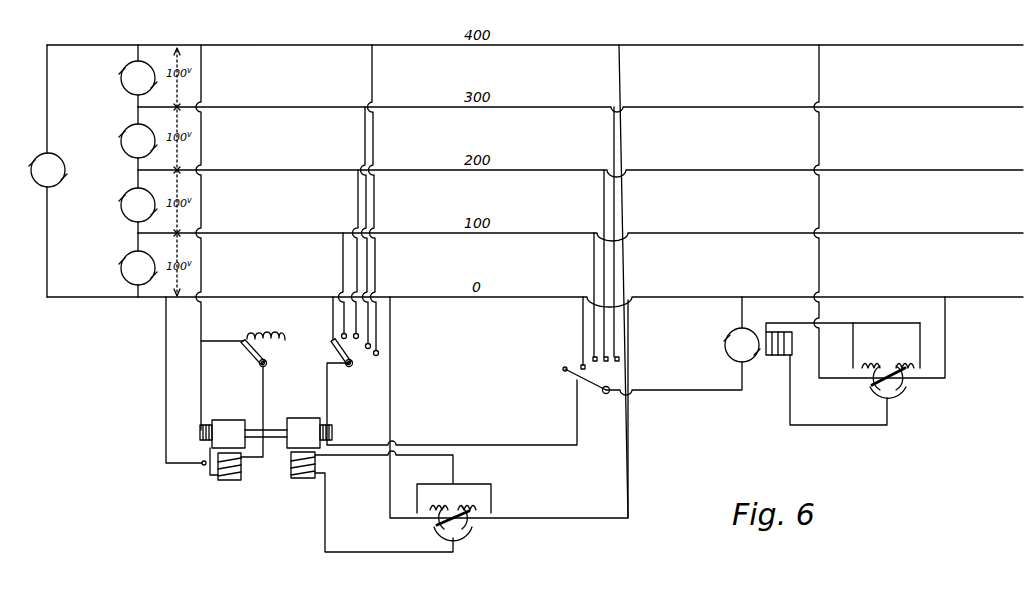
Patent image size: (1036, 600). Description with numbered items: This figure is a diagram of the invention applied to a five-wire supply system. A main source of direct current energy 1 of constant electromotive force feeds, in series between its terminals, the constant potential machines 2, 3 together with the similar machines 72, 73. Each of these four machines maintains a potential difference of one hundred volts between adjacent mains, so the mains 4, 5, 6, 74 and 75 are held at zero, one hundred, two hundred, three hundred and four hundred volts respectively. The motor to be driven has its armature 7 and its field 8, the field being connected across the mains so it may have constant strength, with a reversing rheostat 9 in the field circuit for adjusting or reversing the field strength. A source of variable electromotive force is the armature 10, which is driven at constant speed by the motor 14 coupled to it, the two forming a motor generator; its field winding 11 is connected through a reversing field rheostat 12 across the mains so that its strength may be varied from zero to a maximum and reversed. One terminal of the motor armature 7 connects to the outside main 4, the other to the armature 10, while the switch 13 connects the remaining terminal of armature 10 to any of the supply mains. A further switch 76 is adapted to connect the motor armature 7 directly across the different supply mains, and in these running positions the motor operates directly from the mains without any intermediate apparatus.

The main source of direct current energy 1 is at (36, 171).
The armature of dynamo electric machine 2 is at (132, 265).
The armature of dynamo electric machine 3 is at (132, 201).
The constant potential machine 72 is at (126, 138).
The constant potential machine 73 is at (126, 76).
The main 4 is at (535, 292).
The main 5 is at (580, 227).
The main 6 is at (580, 163).
The main 74 is at (580, 98).
The main 75 is at (535, 32).
The motor armature 7 is at (738, 343).
The motor field 8 is at (843, 374).
The reversing rheostat 9 is at (886, 360).
The armature of dynamo electric machine 10 is at (309, 433).
The field winding 11 is at (371, 501).
The reversing field rheostat 12 is at (454, 518).
The switch 13 is at (355, 206).
The motor 14 is at (225, 388).
The switch 76 is at (595, 281).